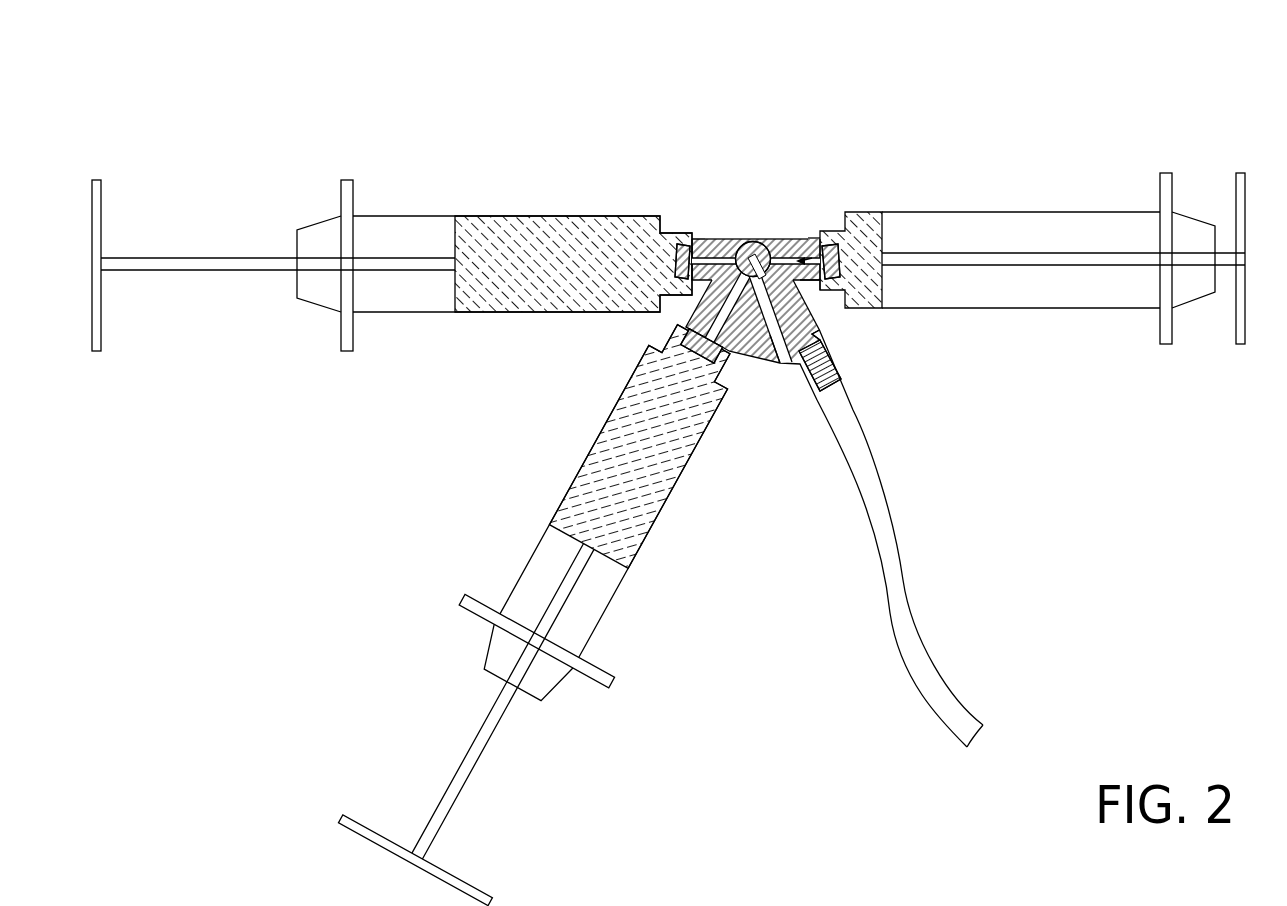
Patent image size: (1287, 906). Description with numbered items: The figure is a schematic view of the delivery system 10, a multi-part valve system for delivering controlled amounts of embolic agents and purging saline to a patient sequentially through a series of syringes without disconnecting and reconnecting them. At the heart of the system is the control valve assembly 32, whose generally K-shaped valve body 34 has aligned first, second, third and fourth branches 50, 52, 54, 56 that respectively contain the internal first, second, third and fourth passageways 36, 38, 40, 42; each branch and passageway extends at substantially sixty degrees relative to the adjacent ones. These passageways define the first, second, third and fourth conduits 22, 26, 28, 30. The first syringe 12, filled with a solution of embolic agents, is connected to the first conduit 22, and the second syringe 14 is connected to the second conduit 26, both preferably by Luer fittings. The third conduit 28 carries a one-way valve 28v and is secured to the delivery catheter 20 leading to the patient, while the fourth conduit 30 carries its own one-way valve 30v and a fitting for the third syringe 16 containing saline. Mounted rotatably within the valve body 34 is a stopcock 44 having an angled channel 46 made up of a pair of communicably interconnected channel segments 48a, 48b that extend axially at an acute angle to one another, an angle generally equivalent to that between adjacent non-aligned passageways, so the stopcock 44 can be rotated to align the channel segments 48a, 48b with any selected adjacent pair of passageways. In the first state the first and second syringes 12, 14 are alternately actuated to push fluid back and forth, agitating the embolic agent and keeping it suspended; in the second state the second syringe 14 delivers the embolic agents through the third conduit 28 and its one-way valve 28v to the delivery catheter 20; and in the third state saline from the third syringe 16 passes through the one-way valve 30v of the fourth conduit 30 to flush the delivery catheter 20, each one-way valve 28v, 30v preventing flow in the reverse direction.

The delivery system 10 is at (978, 102).
The first syringe 12 is at (485, 216).
The second syringe 14 is at (650, 535).
The third syringe 16 is at (1018, 309).
The delivery catheter 20 is at (908, 618).
The first conduit 22 is at (702, 234).
The second conduit 26 is at (724, 333).
The third conduit 28 is at (835, 342).
The one-way valve 28v is at (838, 348).
The fourth conduit 30 is at (810, 240).
The one-way valve 30v is at (812, 258).
The control valve assembly 32 is at (735, 239).
The valve body 34 is at (767, 240).
The first passageway 36 is at (718, 239).
The second passageway 38 is at (707, 300).
The third passageway 40 is at (818, 300).
The fourth passageway 42 is at (792, 240).
The stopcock 44 is at (742, 282).
The angled channel 46 is at (710, 270).
The channel segment 48a is at (757, 250).
The channel segment 48b is at (782, 337).
The first branch 50 is at (708, 240).
The second branch 52 is at (697, 322).
The third branch 54 is at (822, 321).
The fourth branch 56 is at (802, 240).